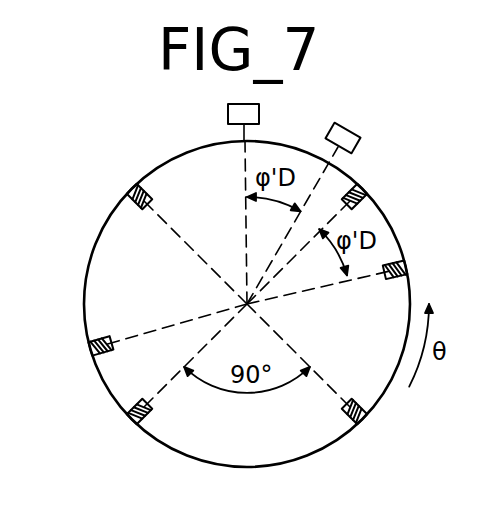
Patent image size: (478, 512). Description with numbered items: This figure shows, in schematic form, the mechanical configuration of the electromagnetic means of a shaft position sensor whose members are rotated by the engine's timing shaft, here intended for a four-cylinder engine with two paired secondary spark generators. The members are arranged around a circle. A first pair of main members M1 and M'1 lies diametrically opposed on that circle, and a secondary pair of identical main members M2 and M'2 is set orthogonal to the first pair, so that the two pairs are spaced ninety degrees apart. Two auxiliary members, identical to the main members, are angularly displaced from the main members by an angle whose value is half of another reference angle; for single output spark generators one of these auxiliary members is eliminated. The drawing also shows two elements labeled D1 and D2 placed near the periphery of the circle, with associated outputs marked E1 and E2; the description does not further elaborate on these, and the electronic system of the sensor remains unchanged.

The first detector D1 is at (228, 113).
The second detector D2 is at (357, 146).
The output signal of first detector E1 is at (258, 104).
The output signal of second detector E2 is at (352, 132).
The main member M1 is at (131, 187).
The main member of secondary pair M2 is at (368, 193).
The main member M'1 is at (383, 423).
The main member of secondary pair M'2 is at (112, 426).